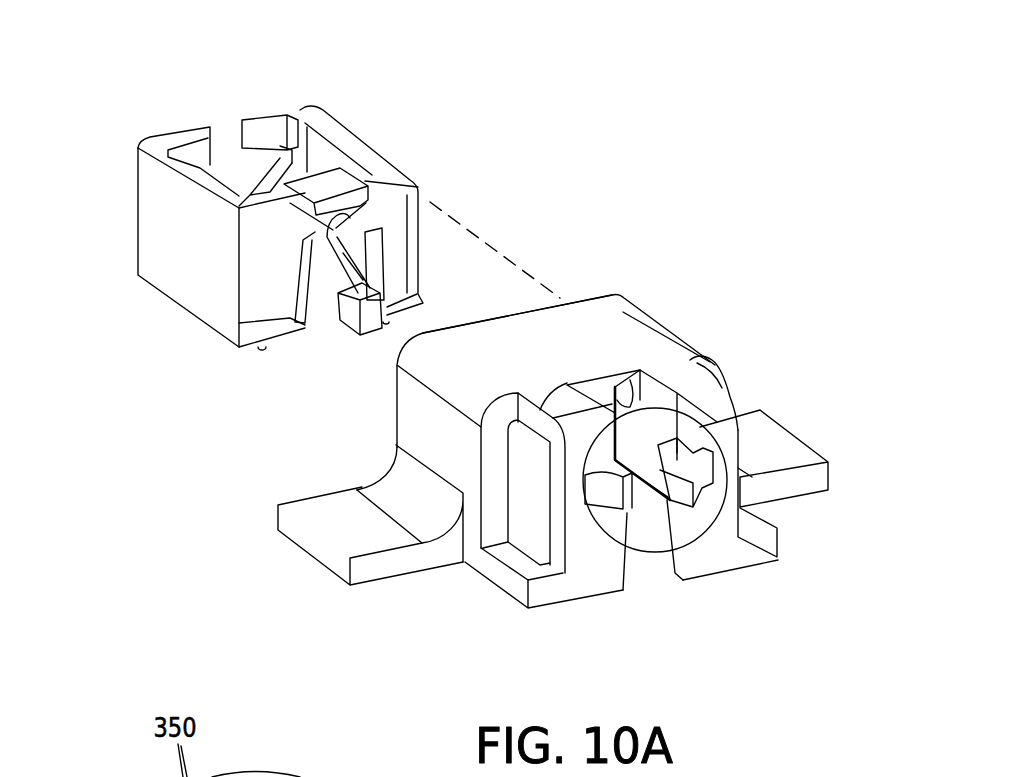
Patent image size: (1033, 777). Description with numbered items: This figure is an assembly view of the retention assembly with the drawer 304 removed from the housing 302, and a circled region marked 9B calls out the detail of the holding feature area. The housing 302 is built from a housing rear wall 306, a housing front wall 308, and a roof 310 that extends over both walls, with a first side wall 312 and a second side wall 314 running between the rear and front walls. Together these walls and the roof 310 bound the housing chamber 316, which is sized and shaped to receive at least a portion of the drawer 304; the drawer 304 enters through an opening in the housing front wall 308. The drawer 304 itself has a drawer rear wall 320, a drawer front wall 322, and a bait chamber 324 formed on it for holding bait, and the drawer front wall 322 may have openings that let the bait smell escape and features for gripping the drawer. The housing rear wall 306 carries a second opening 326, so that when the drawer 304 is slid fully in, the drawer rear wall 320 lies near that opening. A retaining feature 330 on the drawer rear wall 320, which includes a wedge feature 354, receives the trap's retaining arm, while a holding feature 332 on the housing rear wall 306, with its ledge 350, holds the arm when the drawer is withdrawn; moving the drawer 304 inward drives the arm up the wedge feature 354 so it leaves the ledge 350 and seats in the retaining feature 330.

The housing 302 is at (625, 320).
The drawer 304 is at (373, 163).
The housing rear wall 306 is at (710, 520).
The housing front wall 308 is at (452, 300).
The roof 310 is at (531, 330).
The first side wall 312 is at (427, 432).
The second side wall 314 is at (722, 377).
The housing chamber 316 is at (630, 380).
The drawer rear wall 320 is at (278, 262).
The drawer front wall 322 is at (272, 100).
The bait chamber 324 is at (218, 171).
The second opening 326 is at (588, 508).
The retaining feature 330 is at (243, 202).
The holding feature 332 is at (707, 520).
The ledge 350 is at (667, 500).
The wedge feature 354 is at (352, 300).
The detail view reference 9B is at (618, 513).